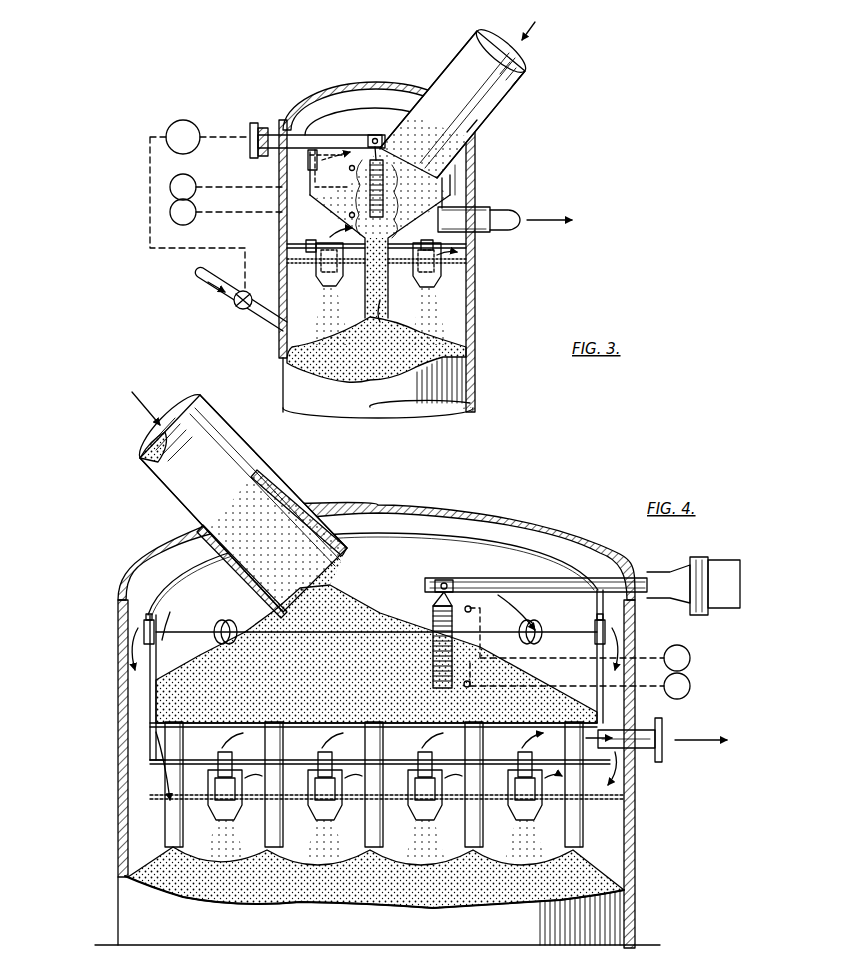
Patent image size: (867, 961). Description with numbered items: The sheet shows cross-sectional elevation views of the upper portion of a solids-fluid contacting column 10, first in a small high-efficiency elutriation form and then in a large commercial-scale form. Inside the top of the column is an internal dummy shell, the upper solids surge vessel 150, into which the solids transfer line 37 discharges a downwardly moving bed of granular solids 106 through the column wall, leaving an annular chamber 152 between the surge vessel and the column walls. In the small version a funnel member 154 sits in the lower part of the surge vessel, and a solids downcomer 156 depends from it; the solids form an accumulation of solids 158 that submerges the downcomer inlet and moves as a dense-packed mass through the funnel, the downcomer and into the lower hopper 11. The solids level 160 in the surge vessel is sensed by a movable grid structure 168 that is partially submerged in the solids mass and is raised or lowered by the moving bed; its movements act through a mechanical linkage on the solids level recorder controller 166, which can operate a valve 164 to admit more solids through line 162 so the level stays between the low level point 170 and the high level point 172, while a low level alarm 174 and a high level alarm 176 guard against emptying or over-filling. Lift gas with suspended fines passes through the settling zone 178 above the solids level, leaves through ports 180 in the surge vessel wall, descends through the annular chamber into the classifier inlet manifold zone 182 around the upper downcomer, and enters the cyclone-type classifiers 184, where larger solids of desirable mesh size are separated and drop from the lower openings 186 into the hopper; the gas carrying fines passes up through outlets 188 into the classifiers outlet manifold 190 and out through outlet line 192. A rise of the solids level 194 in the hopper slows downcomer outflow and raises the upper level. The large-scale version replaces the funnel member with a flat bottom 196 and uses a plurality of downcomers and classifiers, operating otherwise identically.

In FIG. 3, the contacting column 10 is at (475, 168).
In FIG. 4, the contacting column 10 is at (118, 603).
In FIG. 3, the lower hopper 11 is at (440, 368).
In FIG. 4, the lower hopper 11 is at (140, 875).
In FIG. 3, the solids transfer line 37 is at (494, 93).
In FIG. 4, the solids transfer line 37 is at (172, 465).
In FIG. 3, the granular solids 106 is at (470, 136).
In FIG. 4, the granular solids 106 is at (205, 528).
In FIG. 3, the upper solids surge vessel 150 is at (398, 100).
In FIG. 4, the upper solids surge vessel 150 is at (458, 548).
In FIG. 3, the annular chamber 152 is at (335, 100).
In FIG. 3, the funnel member 154 is at (445, 206).
In FIG. 3, the solids downcomer 156 is at (388, 312).
In FIG. 4, the solids downcomer 156 is at (470, 838).
In FIG. 3, the accumulation of solids 158 is at (450, 160).
In FIG. 4, the accumulation of solids 158 is at (284, 632).
In FIG. 3, the solids level 160 is at (442, 192).
In FIG. 4, the solids level 160 is at (303, 552).
In FIG. 3, the line 162 is at (262, 330).
In FIG. 3, the valve 164 is at (238, 310).
In FIG. 3, the solids level recorder controller 166 is at (196, 124).
In FIG. 4, the solids level recorder controller 166 is at (735, 580).
In FIG. 3, the movable grid structure 168 is at (398, 148).
In FIG. 4, the movable grid structure 168 is at (436, 612).
In FIG. 3, the low level point 170 is at (330, 217).
In FIG. 4, the low level point 170 is at (470, 684).
In FIG. 3, the high level point 172 is at (305, 162).
In FIG. 4, the high level point 172 is at (470, 608).
In FIG. 3, the low level alarm 174 is at (170, 212).
In FIG. 4, the low level alarm 174 is at (690, 686).
In FIG. 3, the high level alarm 176 is at (170, 186).
In FIG. 4, the high level alarm 176 is at (690, 657).
In FIG. 3, the settling zone 178 is at (425, 92).
In FIG. 3, the ports 180 is at (312, 158).
In FIG. 4, the ports 180 is at (605, 634).
In FIG. 3, the classifier inlet manifold zone 182 is at (450, 244).
In FIG. 4, the classifier inlet manifold zone 182 is at (625, 772).
In FIG. 3, the cyclone-type classifiers 184 is at (442, 270).
In FIG. 4, the cyclone-type classifiers 184 is at (560, 800).
In FIG. 3, the lower openings 186 is at (430, 292).
In FIG. 4, the lower openings 186 is at (312, 825).
In FIG. 3, the outlets 188 is at (316, 250).
In FIG. 4, the outlets 188 is at (220, 762).
In FIG. 3, the classifiers outlet manifold 190 is at (310, 193).
In FIG. 4, the classifiers outlet manifold 190 is at (165, 740).
In FIG. 3, the outlet line 192 is at (520, 210).
In FIG. 4, the outlet line 192 is at (655, 735).
In FIG. 3, the solids level 194 is at (300, 355).
In FIG. 4, the solids level 194 is at (195, 862).
In FIG. 4, the flat bottom 196 is at (200, 722).